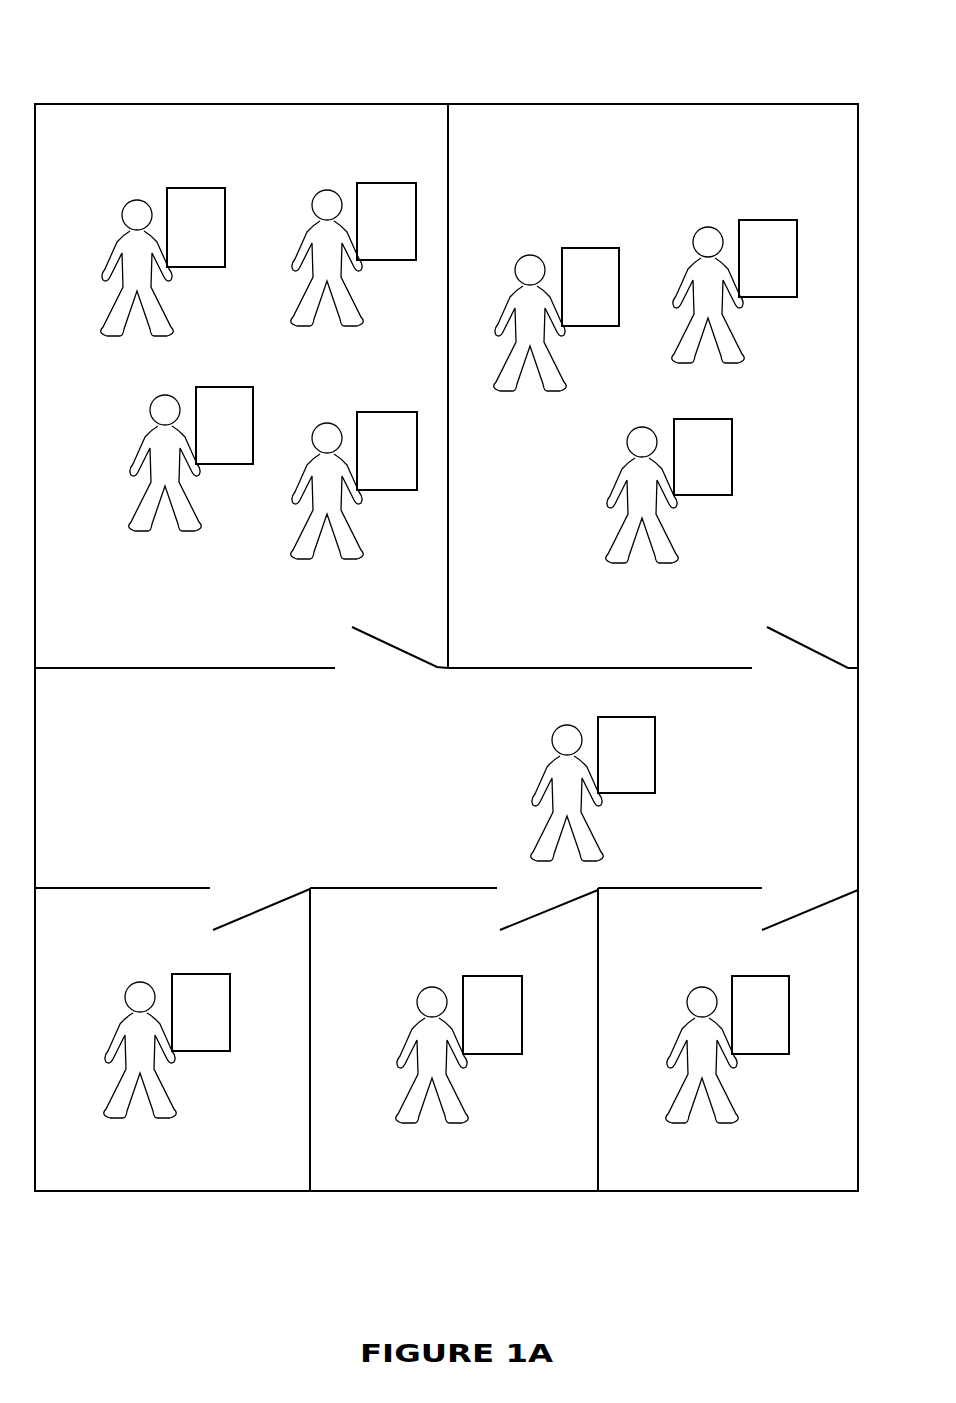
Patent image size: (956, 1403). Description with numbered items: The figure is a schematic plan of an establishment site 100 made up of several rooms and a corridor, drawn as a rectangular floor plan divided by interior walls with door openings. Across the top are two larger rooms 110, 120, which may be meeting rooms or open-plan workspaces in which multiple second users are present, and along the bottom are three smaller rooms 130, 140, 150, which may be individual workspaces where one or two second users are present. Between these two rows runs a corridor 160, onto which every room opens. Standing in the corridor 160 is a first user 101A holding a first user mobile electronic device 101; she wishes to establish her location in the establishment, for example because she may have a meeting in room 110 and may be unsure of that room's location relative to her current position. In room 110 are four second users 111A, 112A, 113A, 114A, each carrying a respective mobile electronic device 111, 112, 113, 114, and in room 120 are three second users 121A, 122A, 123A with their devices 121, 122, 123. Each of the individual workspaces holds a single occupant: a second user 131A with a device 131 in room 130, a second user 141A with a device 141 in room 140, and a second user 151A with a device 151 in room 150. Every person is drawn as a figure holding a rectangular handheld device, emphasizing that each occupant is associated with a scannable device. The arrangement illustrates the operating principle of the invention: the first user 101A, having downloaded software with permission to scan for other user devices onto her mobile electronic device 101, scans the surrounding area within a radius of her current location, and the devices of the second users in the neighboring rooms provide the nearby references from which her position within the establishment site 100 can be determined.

The establishment site 100 is at (125, 50).
The room 110 is at (173, 143).
The room 120 is at (587, 143).
The room 130 is at (173, 928).
The room 140 is at (448, 928).
The room 150 is at (737, 930).
The corridor 160 is at (232, 710).
The first user mobile electronic device 101 is at (644, 755).
The first user 101A is at (538, 788).
The mobile electronic device 111 is at (214, 226).
The second user 111A is at (120, 245).
The mobile electronic device 112 is at (404, 221).
The second user 112A is at (318, 214).
The mobile electronic device 113 is at (242, 425).
The second user 113A is at (148, 441).
The mobile electronic device 114 is at (405, 450).
The second user 114A is at (331, 421).
The mobile electronic device 121 is at (608, 286).
The second user 121A is at (524, 273).
The mobile electronic device 122 is at (786, 258).
The second user 122A is at (702, 245).
The mobile electronic device 123 is at (721, 457).
The second user 123A is at (617, 535).
The mobile electronic device 131 is at (219, 1012).
The second user 131A is at (136, 1022).
The mobile electronic device 141 is at (510, 1014).
The second user 141A is at (420, 1038).
The mobile electronic device 151 is at (778, 1014).
The second user 151A is at (690, 1038).